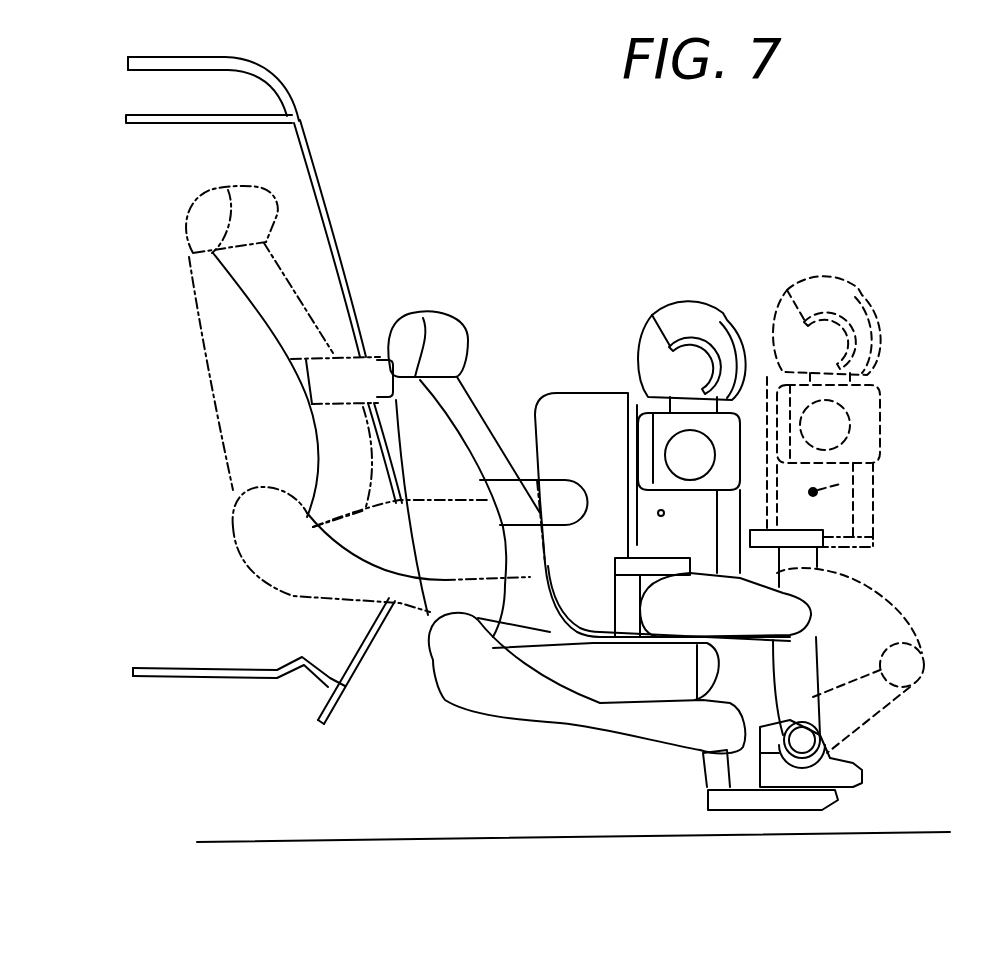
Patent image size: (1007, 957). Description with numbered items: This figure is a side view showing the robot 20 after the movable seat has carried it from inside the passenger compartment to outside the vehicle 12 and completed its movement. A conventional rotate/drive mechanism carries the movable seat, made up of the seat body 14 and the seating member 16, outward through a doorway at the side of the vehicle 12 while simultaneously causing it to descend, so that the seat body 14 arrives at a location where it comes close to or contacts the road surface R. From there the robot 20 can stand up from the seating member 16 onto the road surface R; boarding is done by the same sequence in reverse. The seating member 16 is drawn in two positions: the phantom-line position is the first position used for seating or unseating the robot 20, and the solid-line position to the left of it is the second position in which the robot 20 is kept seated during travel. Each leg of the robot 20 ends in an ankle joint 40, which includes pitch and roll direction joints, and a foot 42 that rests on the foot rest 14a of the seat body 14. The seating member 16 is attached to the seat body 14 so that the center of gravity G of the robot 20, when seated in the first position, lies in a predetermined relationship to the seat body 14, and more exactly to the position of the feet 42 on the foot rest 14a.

The vehicle 12 is at (294, 81).
The seat body 14 is at (263, 230).
The foot rest 14a is at (708, 796).
The seating member 16 is at (747, 643).
The robot 20 is at (778, 292).
The center of gravity G is at (666, 512).
The ankle joint 40 is at (802, 745).
The foot 42 is at (863, 757).
The road surface R is at (912, 832).